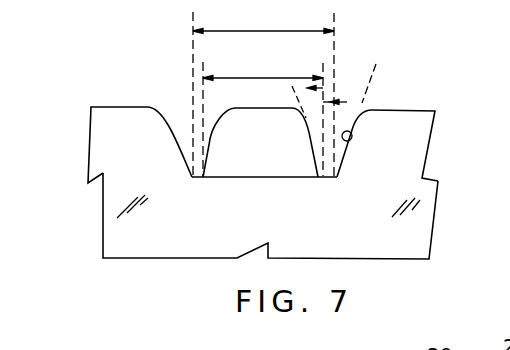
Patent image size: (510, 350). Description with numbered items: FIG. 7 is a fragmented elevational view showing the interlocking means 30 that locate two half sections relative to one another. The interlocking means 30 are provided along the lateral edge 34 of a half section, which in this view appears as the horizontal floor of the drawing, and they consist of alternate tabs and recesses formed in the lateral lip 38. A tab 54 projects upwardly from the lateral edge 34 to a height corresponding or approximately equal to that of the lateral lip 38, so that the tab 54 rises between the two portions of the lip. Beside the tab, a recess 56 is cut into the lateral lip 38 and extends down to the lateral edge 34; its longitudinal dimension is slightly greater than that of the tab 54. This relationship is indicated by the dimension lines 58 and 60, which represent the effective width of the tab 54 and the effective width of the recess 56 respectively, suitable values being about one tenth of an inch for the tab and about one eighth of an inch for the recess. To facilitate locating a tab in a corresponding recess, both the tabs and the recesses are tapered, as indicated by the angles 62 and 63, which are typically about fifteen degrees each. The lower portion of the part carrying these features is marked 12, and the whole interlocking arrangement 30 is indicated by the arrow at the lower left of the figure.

The base body 12 is at (393, 242).
The interlocking means 30 is at (95, 283).
The lateral edge 34 is at (281, 176).
The lateral lip 38 is at (107, 137).
The tab 54 is at (250, 161).
The recess 56 is at (350, 142).
The effective width of the tab 58 is at (278, 78).
The effective width of the recess 60 is at (260, 31).
The taper angle 62 is at (374, 88).
The taper angle 63 is at (285, 92).